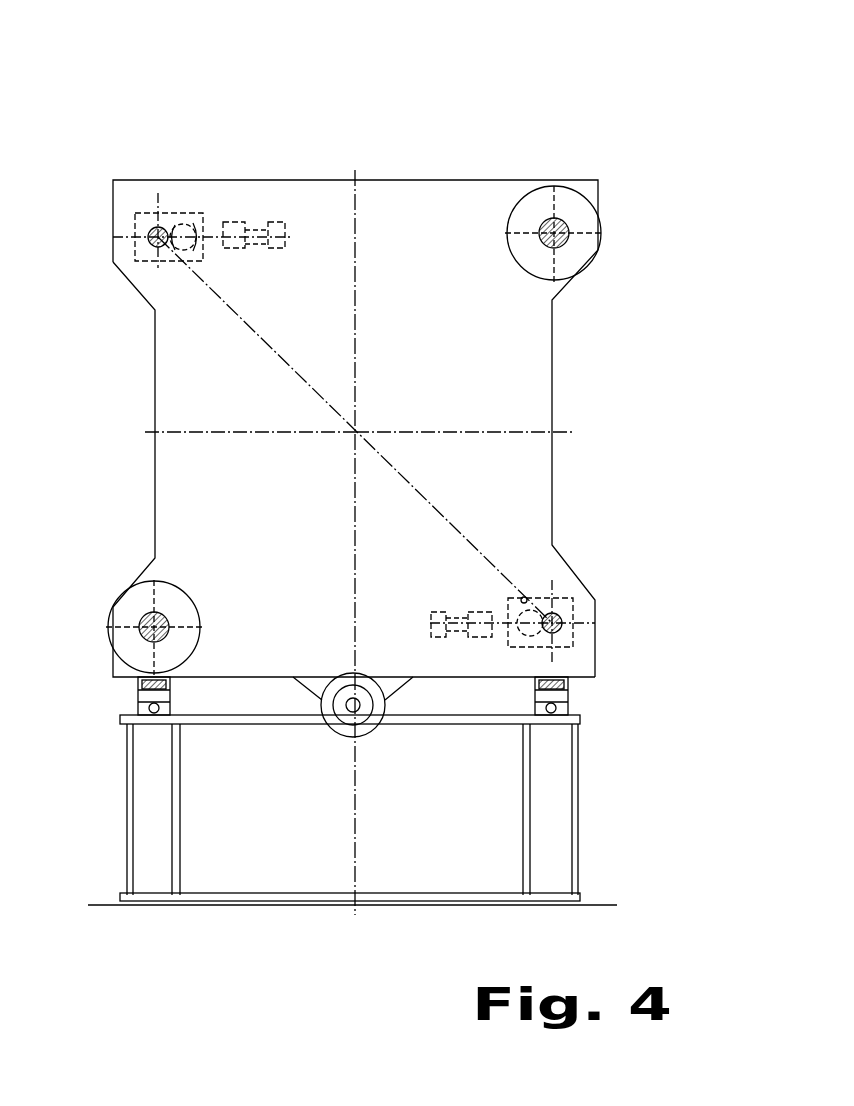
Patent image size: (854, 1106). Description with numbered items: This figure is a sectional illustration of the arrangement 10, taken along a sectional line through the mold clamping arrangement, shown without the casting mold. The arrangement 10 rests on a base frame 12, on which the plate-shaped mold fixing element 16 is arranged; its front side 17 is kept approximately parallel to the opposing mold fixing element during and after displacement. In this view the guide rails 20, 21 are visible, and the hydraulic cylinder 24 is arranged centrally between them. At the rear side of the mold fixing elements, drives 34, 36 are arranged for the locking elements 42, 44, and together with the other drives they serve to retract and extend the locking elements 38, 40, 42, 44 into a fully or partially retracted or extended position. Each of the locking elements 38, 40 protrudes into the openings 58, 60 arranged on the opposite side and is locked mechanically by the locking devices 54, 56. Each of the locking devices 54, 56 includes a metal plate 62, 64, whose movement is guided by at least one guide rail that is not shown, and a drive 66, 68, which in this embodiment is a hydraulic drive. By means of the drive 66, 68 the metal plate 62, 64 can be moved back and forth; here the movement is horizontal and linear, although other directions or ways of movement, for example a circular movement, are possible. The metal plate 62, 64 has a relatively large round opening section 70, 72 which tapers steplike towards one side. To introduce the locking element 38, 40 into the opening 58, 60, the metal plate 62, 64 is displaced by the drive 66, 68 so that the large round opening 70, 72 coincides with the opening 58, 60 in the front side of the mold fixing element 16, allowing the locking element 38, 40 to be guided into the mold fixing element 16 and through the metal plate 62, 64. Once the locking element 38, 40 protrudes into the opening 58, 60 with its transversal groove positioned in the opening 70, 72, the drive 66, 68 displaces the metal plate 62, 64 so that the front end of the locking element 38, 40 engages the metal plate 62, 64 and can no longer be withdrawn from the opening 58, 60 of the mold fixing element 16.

The arrangement 10 is at (452, 73).
The base frame 12 is at (590, 778).
The mold fixing element 16 is at (403, 371).
The front side 17 is at (470, 371).
The guide rail 20 is at (138, 707).
The guide rail 21 is at (570, 706).
The hydraulic cylinder 24 is at (365, 718).
The drive 34 is at (560, 188).
The drive 36 is at (140, 613).
The locking element 38 is at (151, 252).
The locking element 40 is at (585, 630).
The locking element 42 is at (568, 227).
The locking element 44 is at (138, 631).
The locking device 54 is at (142, 200).
The locking device 56 is at (472, 572).
The opening 58 is at (156, 208).
The opening 60 is at (563, 606).
The metal plate 62 is at (196, 205).
The metal plate 64 is at (600, 600).
The drive 66 is at (276, 222).
The drive 68 is at (440, 612).
The round opening section 70 is at (198, 250).
The round opening section 72 is at (522, 596).